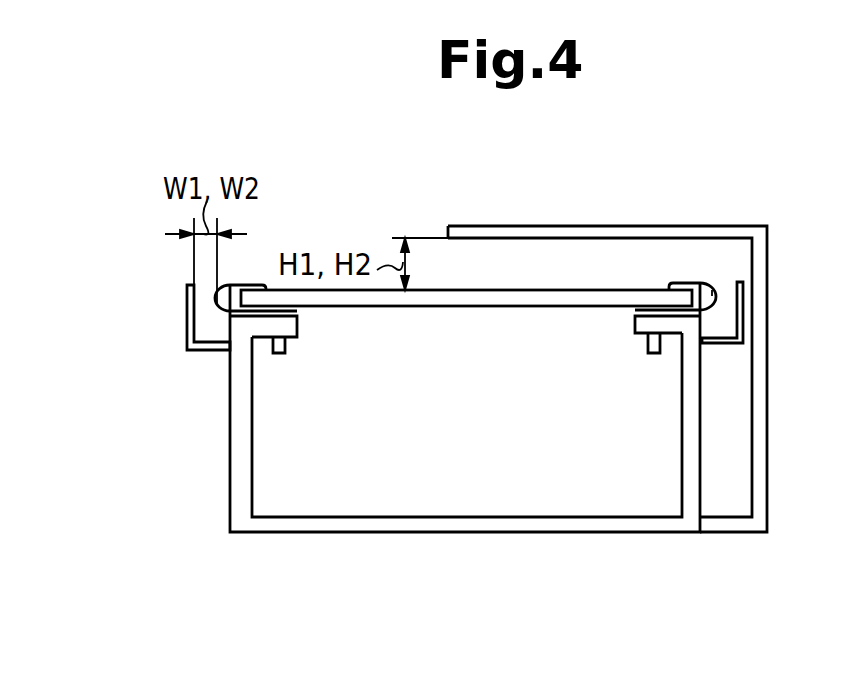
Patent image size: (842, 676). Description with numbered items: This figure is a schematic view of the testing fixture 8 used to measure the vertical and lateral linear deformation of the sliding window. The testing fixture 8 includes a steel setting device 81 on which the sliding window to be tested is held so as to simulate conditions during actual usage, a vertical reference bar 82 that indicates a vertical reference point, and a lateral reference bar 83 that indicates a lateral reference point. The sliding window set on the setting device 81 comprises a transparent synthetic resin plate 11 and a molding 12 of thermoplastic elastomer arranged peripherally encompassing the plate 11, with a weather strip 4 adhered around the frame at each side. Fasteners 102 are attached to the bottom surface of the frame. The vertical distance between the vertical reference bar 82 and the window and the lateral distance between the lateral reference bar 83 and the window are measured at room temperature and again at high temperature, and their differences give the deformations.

The testing fixture 8 is at (590, 187).
The setting device 81 is at (433, 532).
The vertical reference bar 82 is at (503, 226).
The lateral reference bar 83 is at (187, 296).
The transparent synthetic resin plate 11 is at (480, 306).
The molding 12 is at (252, 284).
The weather strip 4 is at (218, 303).
The fastener 102 is at (283, 353).